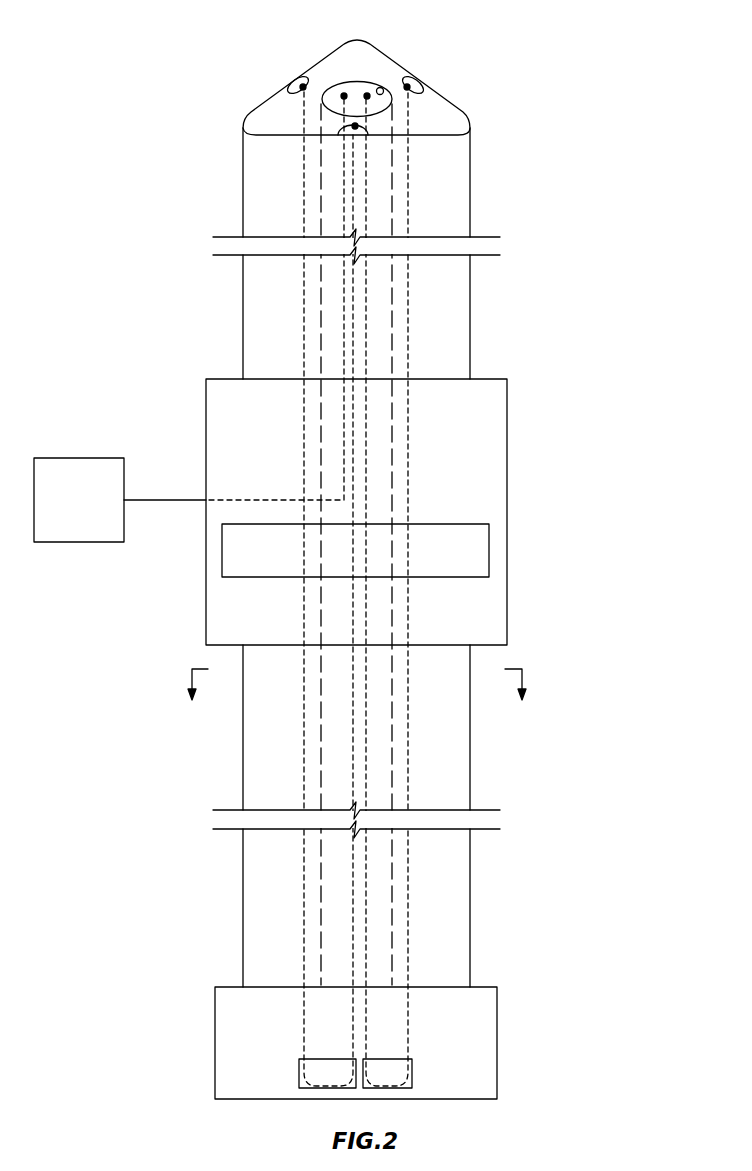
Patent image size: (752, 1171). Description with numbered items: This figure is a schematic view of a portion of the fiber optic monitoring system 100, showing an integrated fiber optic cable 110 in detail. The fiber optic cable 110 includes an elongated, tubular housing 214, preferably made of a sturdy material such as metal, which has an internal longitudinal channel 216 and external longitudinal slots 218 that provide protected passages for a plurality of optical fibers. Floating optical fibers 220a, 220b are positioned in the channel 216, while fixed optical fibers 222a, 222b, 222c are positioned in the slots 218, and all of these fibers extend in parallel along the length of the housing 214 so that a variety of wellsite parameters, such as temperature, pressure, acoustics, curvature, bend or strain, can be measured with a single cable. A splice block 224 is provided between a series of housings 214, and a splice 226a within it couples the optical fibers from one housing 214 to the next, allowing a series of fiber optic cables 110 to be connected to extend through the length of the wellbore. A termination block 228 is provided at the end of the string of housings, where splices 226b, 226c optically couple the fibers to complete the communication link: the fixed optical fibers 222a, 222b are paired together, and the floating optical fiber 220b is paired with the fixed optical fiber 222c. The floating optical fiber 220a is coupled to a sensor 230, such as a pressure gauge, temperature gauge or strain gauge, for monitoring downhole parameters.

The fiber optic monitoring system 100 is at (641, 87).
The fiber optic cable 110 is at (234, 201).
The tubular housing 214 is at (253, 295).
The internal longitudinal channel 216 is at (384, 89).
The external longitudinal slots 218 is at (352, 124).
The floating optical fiber 220a is at (344, 92).
The floating optical fiber 220b is at (367, 92).
The fixed optical fiber 222a is at (296, 80).
The fixed optical fiber 222b is at (352, 131).
The fixed optical fiber 222c is at (415, 80).
The splice block 224 is at (507, 430).
The splice 226a is at (489, 540).
The splice 226b is at (299, 1068).
The splice 226c is at (412, 1075).
The termination block 228 is at (215, 1040).
The sensor 230 is at (61, 511).